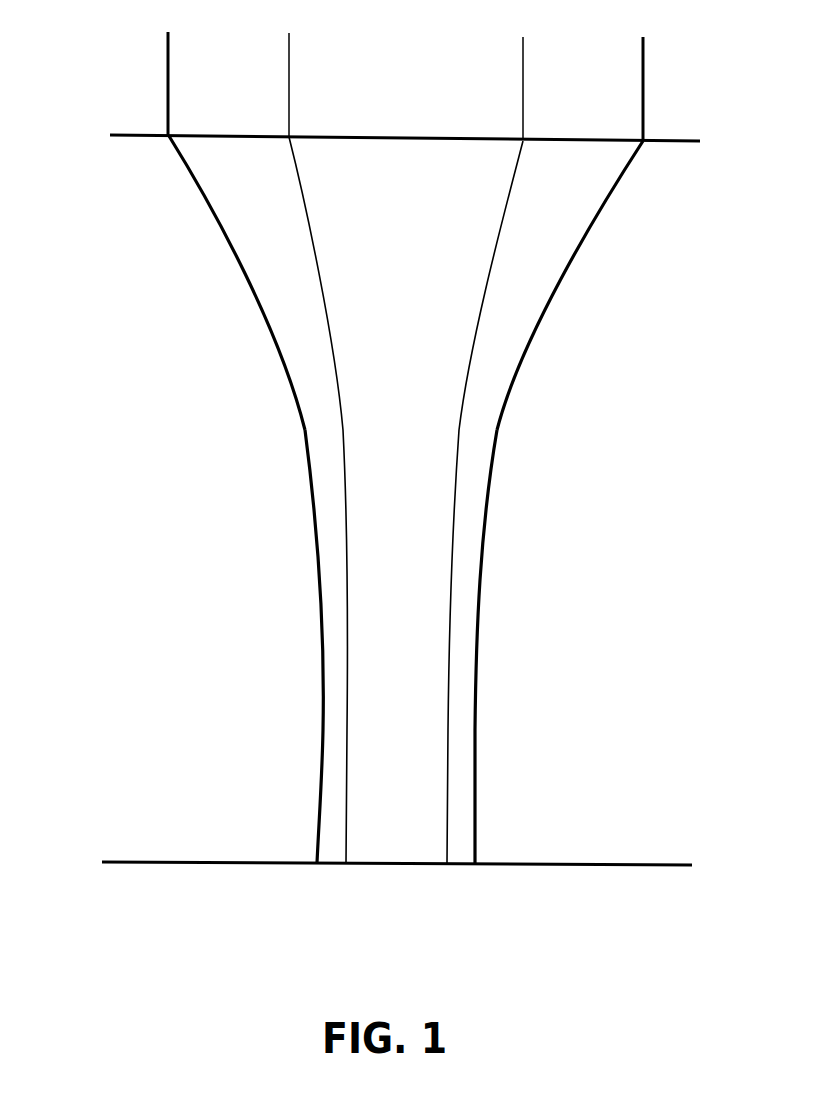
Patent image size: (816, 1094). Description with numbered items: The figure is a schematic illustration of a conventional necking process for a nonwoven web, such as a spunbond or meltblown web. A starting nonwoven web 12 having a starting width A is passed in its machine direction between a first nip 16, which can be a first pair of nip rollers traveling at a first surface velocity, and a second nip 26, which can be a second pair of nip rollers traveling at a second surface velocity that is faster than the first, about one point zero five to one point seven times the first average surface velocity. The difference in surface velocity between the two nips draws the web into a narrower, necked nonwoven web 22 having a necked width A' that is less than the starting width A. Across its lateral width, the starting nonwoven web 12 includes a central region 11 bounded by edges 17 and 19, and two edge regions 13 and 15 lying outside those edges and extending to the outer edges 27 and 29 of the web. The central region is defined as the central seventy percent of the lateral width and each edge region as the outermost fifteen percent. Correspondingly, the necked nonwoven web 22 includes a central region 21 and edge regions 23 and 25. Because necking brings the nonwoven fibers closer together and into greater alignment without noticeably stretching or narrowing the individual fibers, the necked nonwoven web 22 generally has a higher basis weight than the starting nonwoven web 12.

The central region 11 is at (393, 110).
The nonwoven web 12 is at (398, 67).
The edge region 13 is at (188, 50).
The edge region 15 is at (630, 68).
The first nip 16 is at (405, 144).
The edge of the central region 17 is at (327, 293).
The edge of the central region 19 is at (469, 345).
The central region 21 is at (363, 830).
The necked nonwoven web 22 is at (415, 740).
The edge region 23 is at (320, 801).
The edge region 25 is at (462, 784).
The second nip 26 is at (399, 867).
The edge of the nonwoven web 27 is at (272, 310).
The edge of the nonwoven web 29 is at (530, 330).